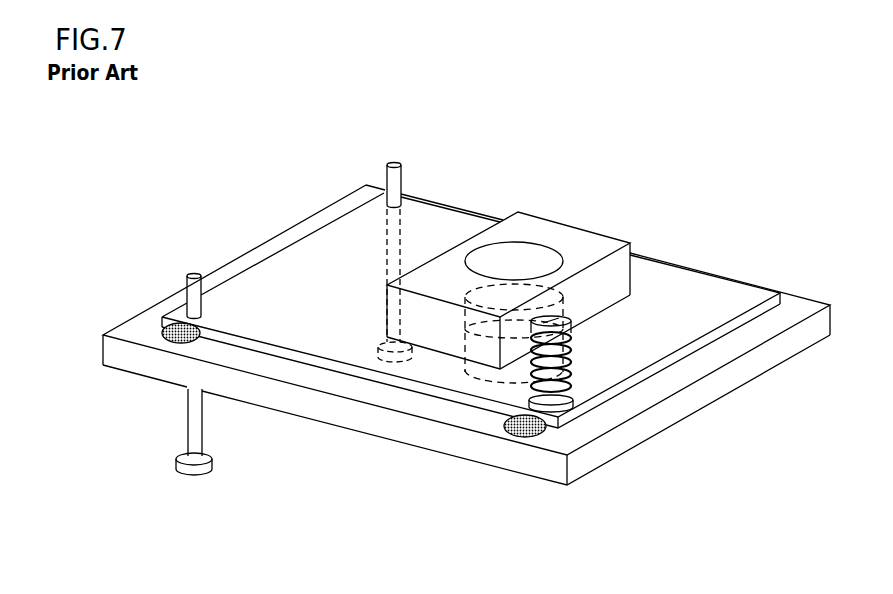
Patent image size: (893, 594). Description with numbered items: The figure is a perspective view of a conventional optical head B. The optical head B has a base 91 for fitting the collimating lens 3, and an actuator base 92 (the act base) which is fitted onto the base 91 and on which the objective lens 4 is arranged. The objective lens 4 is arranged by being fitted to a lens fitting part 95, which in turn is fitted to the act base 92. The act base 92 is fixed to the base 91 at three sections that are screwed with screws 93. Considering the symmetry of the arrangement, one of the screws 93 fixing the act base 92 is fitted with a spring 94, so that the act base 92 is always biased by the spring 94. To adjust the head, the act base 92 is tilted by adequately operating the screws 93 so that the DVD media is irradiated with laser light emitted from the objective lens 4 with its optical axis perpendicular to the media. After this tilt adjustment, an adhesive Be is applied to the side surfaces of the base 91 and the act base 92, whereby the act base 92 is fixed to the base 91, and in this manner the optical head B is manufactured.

The optical head B is at (196, 197).
The base 91 is at (108, 344).
The actuator base 92 is at (703, 280).
The screws 93 is at (395, 161).
The spring 94 is at (571, 341).
The lens fitting part 95 is at (588, 242).
The objective lens 4 is at (521, 265).
The collimating lens 3 is at (478, 365).
The adhesive Be is at (177, 343).